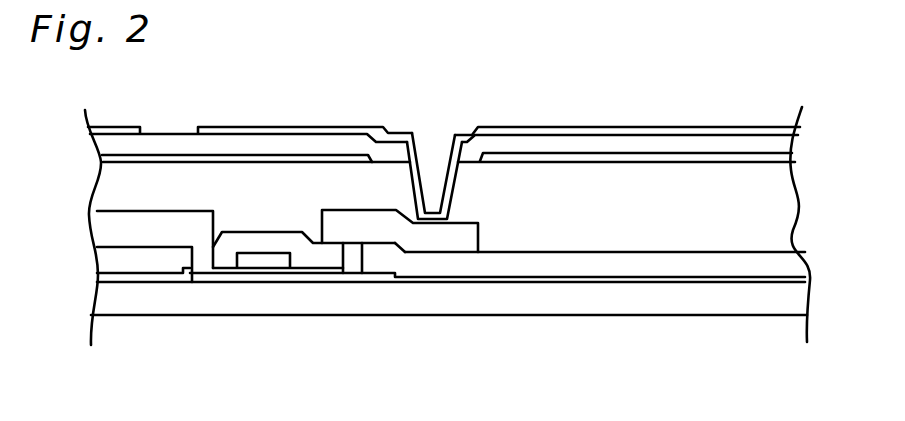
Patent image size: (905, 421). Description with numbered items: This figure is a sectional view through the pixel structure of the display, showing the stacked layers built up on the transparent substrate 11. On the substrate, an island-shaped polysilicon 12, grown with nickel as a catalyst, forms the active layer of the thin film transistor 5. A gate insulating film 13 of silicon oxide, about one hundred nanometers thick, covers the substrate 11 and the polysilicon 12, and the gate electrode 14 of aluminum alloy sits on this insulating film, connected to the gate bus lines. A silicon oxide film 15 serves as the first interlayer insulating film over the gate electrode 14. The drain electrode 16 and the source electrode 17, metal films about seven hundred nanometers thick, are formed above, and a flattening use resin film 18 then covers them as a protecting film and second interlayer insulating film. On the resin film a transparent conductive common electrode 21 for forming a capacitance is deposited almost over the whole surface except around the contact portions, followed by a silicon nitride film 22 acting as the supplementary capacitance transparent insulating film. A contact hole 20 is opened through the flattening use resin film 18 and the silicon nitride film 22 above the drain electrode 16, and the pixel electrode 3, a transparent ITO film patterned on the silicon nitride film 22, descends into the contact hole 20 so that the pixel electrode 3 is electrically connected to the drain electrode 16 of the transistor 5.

The pixel electrode 3 is at (617, 128).
The thin film transistor 5 is at (267, 219).
The transparent substrate 11 is at (628, 298).
The polysilicon 12 is at (310, 282).
The gate insulating film 13 is at (727, 278).
The gate electrode 14 is at (260, 260).
The silicon oxide film 15 is at (787, 266).
The drain electrode 16 is at (430, 238).
The source electrode 17 is at (125, 227).
The flattening use resin film 18 is at (765, 210).
The contact hole 20 is at (433, 170).
The common electrode 21 is at (757, 160).
The silicon nitride film 22 is at (683, 147).